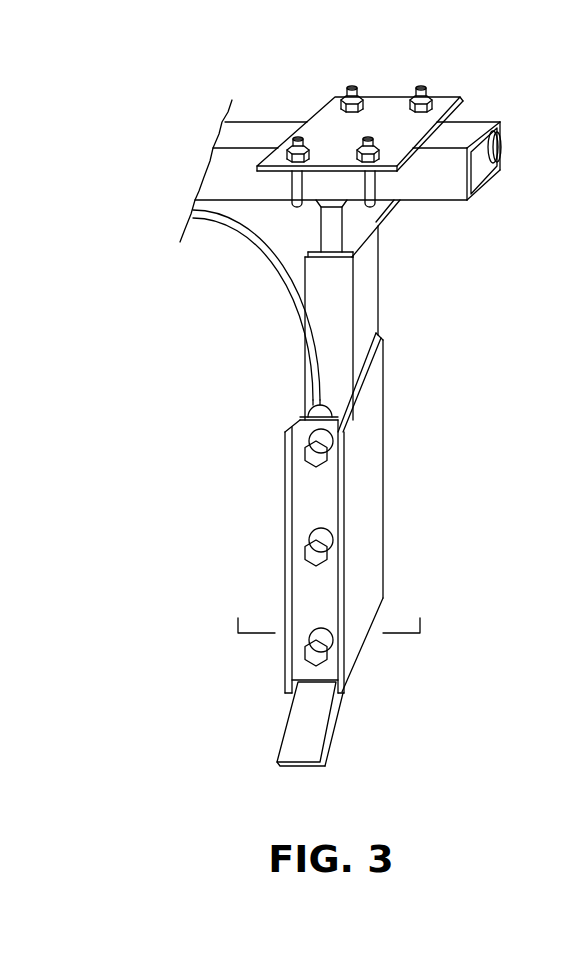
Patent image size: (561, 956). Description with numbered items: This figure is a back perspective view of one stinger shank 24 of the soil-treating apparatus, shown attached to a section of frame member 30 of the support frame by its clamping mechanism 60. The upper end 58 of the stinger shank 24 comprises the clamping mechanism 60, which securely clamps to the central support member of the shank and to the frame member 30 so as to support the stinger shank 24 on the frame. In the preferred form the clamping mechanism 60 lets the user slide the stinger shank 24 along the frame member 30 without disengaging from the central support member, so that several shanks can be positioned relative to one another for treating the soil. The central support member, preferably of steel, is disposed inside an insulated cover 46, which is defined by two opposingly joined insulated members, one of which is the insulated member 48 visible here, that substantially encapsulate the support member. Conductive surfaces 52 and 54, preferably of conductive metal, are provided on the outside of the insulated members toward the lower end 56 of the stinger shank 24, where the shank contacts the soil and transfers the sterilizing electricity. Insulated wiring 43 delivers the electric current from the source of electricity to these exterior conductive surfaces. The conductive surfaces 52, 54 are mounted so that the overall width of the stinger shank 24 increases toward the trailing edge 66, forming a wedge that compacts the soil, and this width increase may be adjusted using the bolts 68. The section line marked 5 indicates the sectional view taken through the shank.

The stinger shank 24 is at (228, 357).
The frame member 30 is at (463, 125).
The insulated wiring 43 is at (268, 246).
The insulated cover 46 is at (376, 302).
The insulated member 48 is at (362, 273).
The conductive surface 52 is at (283, 478).
The conductive surface 54 is at (374, 403).
The lower end 56 is at (382, 687).
The upper end 58 is at (427, 211).
The clamping mechanism 60 is at (386, 112).
The trailing edge 66 is at (272, 666).
The bolts 68 is at (313, 553).
The section line 5- 5 is at (329, 614).